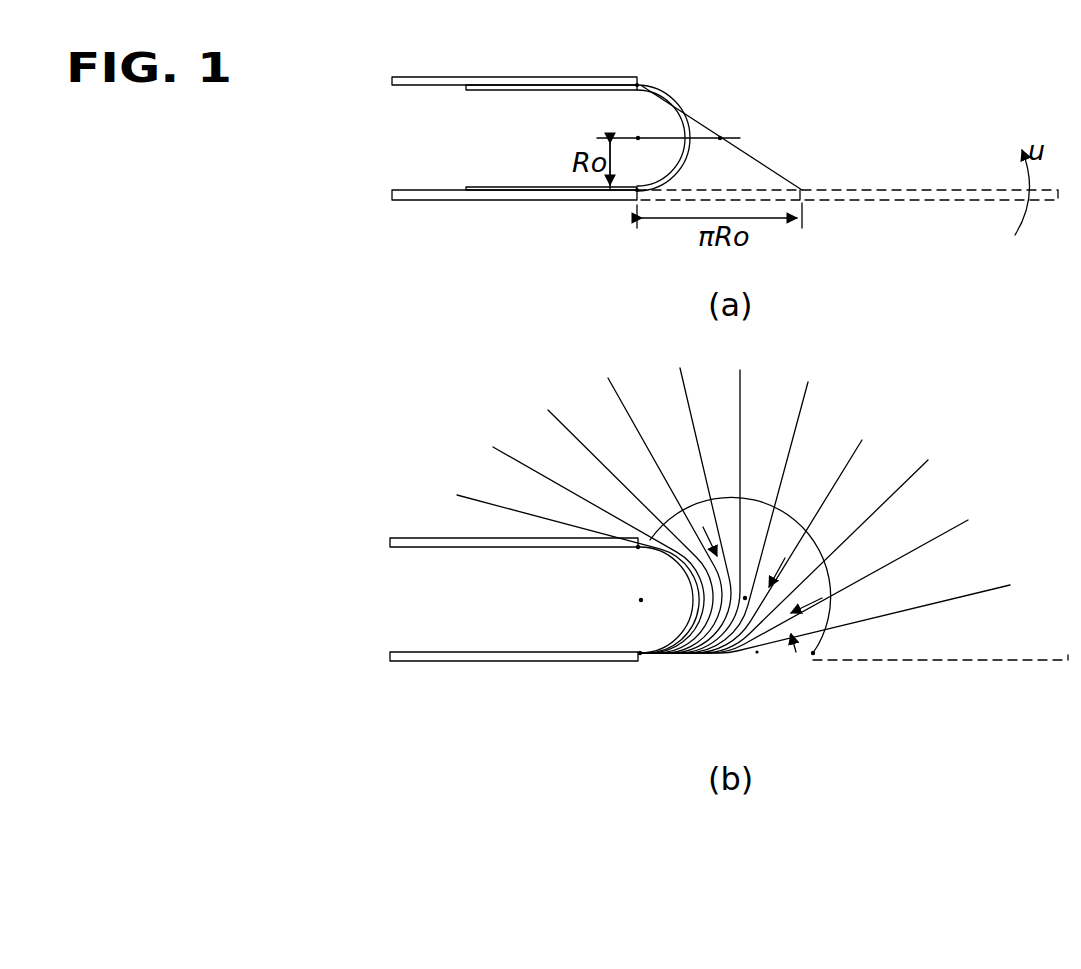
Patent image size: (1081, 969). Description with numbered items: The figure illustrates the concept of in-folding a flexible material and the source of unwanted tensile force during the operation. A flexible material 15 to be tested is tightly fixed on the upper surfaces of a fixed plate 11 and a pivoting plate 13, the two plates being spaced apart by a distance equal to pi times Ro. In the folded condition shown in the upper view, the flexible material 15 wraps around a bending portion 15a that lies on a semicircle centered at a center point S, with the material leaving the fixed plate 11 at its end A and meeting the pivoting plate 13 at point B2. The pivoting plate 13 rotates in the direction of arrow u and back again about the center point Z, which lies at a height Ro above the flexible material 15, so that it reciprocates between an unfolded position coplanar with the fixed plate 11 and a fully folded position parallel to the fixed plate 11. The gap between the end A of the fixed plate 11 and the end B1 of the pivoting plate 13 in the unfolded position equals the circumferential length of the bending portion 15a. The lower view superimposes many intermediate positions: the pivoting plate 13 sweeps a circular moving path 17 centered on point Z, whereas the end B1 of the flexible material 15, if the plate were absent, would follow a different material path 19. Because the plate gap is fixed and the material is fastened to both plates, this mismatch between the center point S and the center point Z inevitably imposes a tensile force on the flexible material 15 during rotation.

The fixed plate 11 is at (438, 201).
The pivoting plate 13 is at (442, 78).
The flexible material 15 is at (536, 90).
The bending portion 15a is at (684, 104).
The moving path 17 is at (828, 604).
The material path 19 is at (790, 640).
The end of the fixed plate A is at (632, 196).
The end of the pivoting plate B1 is at (814, 193).
The film attachment point on upper plate B2 is at (626, 85).
The center point S is at (668, 362).
The center point Z is at (762, 690).